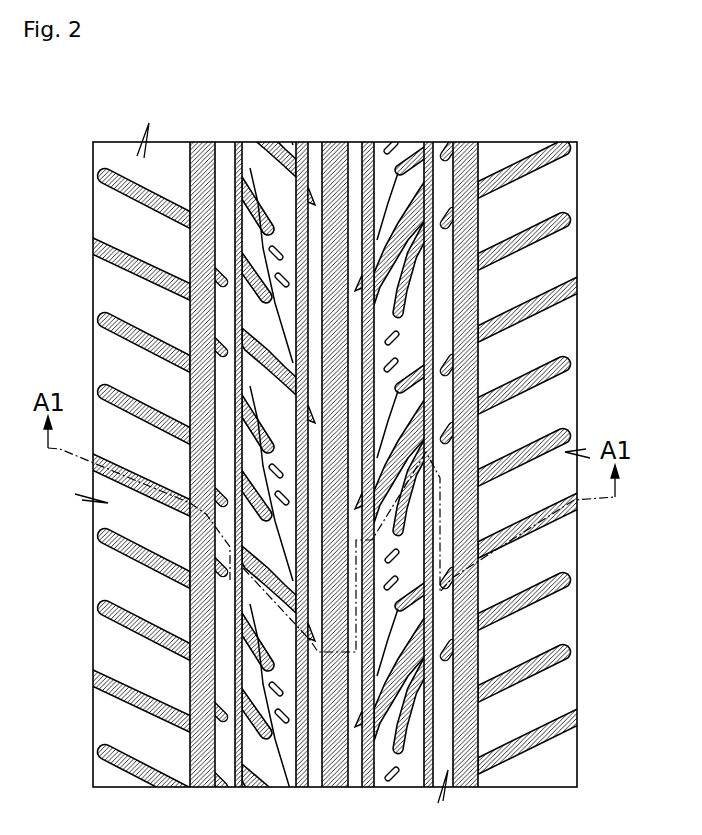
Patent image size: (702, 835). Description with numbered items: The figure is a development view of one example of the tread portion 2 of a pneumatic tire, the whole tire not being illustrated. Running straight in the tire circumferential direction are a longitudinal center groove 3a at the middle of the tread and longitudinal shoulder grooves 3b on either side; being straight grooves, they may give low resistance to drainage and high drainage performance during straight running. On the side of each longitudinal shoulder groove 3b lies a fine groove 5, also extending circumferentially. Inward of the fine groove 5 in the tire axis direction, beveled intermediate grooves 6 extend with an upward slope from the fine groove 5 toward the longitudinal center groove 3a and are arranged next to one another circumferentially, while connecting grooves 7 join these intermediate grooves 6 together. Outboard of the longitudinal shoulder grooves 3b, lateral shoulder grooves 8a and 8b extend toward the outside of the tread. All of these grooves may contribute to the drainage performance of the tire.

The tread portion 2 is at (80, 119).
The longitudinal center groove 3a is at (332, 142).
The longitudinal shoulder groove 3b is at (200, 692).
The fine groove 5 is at (237, 598).
The beveled intermediate groove 6 is at (262, 372).
The connecting groove 7 is at (297, 312).
The lateral shoulder groove 8a is at (152, 193).
The lateral shoulder groove 8b is at (143, 268).